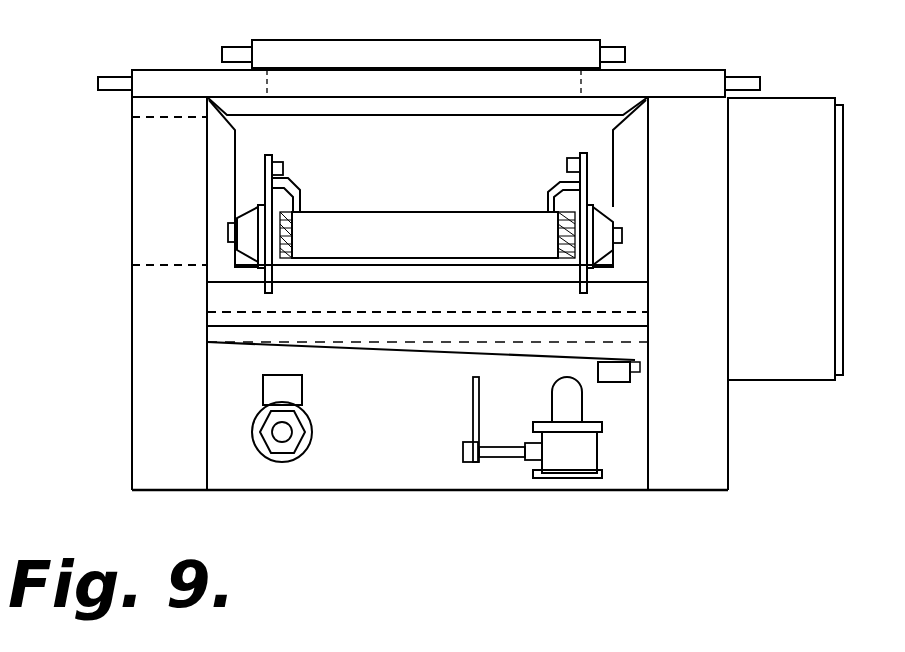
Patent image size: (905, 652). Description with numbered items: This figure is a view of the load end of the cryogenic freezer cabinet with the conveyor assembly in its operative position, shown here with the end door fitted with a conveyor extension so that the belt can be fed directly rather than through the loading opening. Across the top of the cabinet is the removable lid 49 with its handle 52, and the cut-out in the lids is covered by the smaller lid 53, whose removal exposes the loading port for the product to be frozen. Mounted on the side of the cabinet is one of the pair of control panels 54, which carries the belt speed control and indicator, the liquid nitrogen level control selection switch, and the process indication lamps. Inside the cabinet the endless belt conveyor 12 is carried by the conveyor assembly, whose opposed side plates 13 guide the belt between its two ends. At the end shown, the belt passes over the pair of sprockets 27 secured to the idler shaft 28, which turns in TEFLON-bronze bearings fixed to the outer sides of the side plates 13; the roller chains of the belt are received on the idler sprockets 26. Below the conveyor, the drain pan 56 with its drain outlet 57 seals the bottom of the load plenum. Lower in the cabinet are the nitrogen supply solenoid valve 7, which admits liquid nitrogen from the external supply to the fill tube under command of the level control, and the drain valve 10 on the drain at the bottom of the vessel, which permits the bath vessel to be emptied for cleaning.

The nitrogen supply solenoid valve 7 is at (307, 444).
The drain valve 10 is at (540, 463).
The endless belt conveyor 12 is at (459, 188).
The side plates 13 is at (590, 188).
The idler sprockets 26 is at (585, 259).
The sprockets 27 is at (573, 217).
The idler shaft 28 is at (622, 238).
The removable lid 49 is at (193, 64).
The handles 52 is at (112, 78).
The smaller lid 53 is at (413, 28).
The control panels 54 is at (791, 381).
The drain pan 56 is at (406, 352).
The drain outlet 57 is at (640, 367).